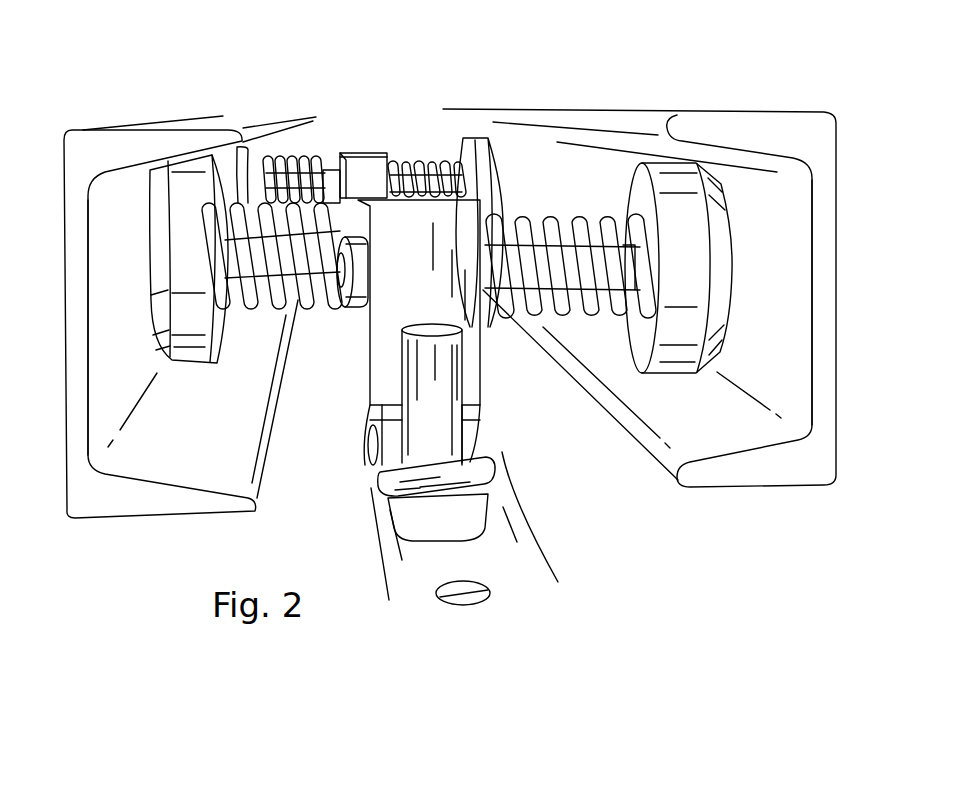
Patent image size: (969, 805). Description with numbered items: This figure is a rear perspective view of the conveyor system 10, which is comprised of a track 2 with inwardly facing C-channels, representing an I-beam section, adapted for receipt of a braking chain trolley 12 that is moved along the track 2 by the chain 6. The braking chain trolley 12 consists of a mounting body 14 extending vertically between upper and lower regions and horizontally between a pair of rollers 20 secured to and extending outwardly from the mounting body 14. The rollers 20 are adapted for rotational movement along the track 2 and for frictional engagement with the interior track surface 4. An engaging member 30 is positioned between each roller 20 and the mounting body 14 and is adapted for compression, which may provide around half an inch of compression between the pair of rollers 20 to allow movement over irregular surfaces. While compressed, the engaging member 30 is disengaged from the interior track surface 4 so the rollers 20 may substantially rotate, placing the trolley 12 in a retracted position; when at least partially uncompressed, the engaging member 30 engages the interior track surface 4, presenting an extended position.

The track 2 is at (87, 143).
The interior track surface 4 is at (92, 243).
The chain 6 is at (570, 612).
The conveyor system 10 is at (804, 528).
The braking chain trolley 12 is at (481, 328).
The mounting body 14 is at (408, 230).
The rollers 20 is at (188, 325).
The engaging member 30 is at (290, 290).